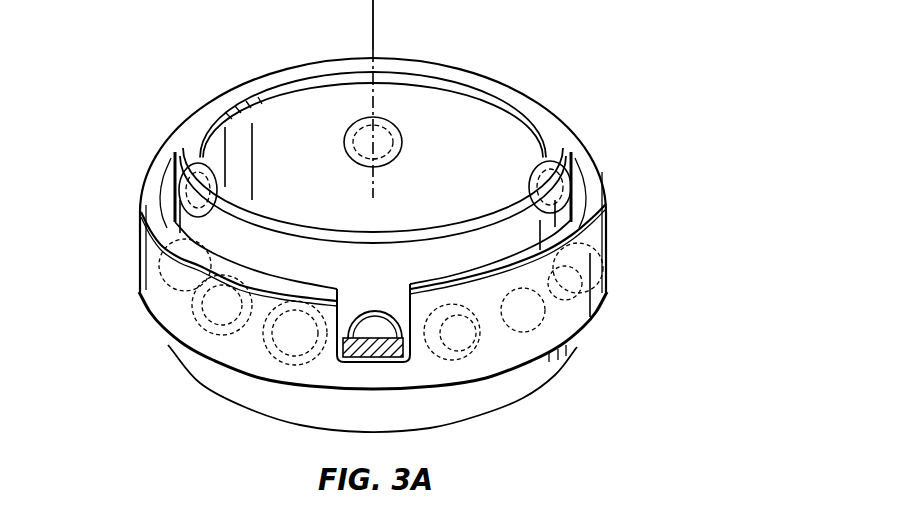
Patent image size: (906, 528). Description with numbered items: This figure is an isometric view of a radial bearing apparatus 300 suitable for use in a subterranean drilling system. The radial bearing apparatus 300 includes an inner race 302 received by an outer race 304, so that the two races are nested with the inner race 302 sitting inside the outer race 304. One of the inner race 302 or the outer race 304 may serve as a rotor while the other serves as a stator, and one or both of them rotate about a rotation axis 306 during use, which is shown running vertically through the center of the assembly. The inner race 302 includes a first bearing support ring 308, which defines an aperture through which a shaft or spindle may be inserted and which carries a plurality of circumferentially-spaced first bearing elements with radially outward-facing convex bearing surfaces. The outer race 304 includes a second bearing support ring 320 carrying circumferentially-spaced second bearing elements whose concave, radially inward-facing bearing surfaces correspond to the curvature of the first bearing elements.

The radial bearing apparatus 300 is at (654, 157).
The inner race 302 is at (190, 102).
The outer race 304 is at (134, 305).
The rotation axis 306 is at (373, 32).
The first bearing support ring 308 is at (517, 97).
The second bearing support ring 320 is at (600, 201).